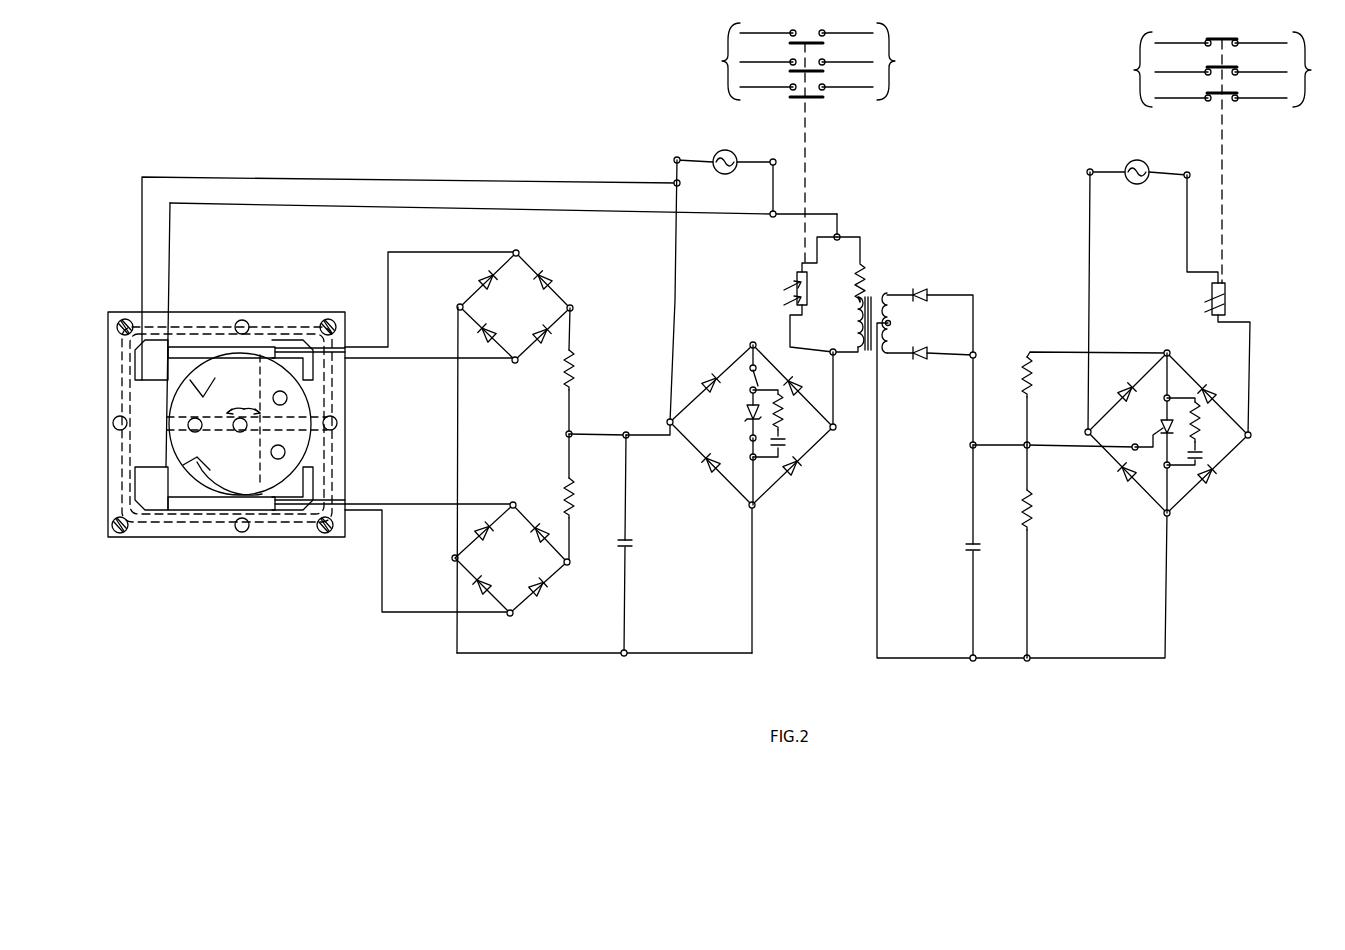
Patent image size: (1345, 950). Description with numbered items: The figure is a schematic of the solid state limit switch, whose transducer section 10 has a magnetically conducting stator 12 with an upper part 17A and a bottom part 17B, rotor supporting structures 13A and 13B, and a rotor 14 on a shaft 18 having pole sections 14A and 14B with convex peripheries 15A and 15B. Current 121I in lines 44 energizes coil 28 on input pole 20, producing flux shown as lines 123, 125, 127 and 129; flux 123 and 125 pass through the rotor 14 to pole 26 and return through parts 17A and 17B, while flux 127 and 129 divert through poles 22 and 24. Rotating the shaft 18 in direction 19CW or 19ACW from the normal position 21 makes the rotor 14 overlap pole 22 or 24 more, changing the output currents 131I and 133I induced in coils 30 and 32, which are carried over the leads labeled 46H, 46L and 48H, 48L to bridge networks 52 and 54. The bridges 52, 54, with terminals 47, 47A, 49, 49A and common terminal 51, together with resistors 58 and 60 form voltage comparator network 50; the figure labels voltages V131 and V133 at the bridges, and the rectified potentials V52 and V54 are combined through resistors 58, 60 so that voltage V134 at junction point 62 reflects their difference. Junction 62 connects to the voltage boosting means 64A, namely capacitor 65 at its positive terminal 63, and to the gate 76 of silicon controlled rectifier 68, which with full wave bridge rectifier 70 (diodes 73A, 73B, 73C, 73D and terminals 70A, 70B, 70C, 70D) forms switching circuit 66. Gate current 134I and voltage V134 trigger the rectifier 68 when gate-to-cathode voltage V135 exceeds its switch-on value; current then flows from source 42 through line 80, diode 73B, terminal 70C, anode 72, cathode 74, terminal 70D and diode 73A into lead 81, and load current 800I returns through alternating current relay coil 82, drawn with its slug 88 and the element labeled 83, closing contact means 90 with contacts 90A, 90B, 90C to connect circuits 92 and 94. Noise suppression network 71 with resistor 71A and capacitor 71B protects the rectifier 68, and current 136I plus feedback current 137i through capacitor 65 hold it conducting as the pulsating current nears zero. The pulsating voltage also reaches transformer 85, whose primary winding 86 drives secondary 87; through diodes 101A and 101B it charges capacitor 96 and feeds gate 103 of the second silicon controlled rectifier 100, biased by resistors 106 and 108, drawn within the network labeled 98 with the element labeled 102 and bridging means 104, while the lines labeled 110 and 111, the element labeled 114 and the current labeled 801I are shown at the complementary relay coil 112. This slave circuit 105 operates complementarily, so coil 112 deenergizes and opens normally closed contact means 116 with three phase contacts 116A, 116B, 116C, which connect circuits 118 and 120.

The switching member 10 is at (249, 281).
The stator 12 is at (108, 313).
The rotor supporting means 13A is at (125, 319).
The rotor supporting means 13B is at (330, 533).
The rotor 14 is at (232, 414).
The magnetic pole section 14A is at (200, 466).
The magnetic pole section 14B is at (292, 488).
The outer periphery 15A is at (279, 425).
The outer periphery 15B is at (292, 360).
The upper part of stator 17A is at (108, 345).
The bottom part of stator 17B is at (108, 530).
The shaft 18 is at (241, 432).
The direction of rotation 19ACW is at (225, 412).
The direction of rotation 19CW is at (255, 414).
The main pole 20 is at (151, 360).
The reference line 21 is at (193, 432).
The magnetic pole structure 22 is at (207, 357).
The magnetic pole 24 is at (247, 470).
The pole 26 is at (313, 483).
The coil 28 is at (151, 488).
The coil 30 is at (263, 347).
The coil 32 is at (207, 505).
The alternating voltage source 42 is at (713, 152).
The lines 44 is at (245, 176).
The high lead 46H is at (392, 252).
The low lead 46L is at (432, 357).
The bridge terminal 47 is at (520, 251).
The terminal 47A is at (572, 305).
The high lead 48H is at (402, 503).
The low lead 48L is at (380, 605).
The bridge terminal 49 is at (514, 616).
The terminal 49A is at (569, 570).
The voltage comparator network 50 is at (521, 679).
The common terminal 51 is at (458, 304).
The bridge network 52 is at (524, 315).
The bridge network 54 is at (519, 562).
The resistor 58 is at (563, 376).
The resistor 60 is at (576, 500).
The junction point 62 is at (568, 430).
The junction point 63 is at (628, 434).
The voltage boosting means 64A is at (634, 680).
The capacitor 65 is at (632, 545).
The switching circuit 66 is at (757, 682).
The silicon controlled rectifier 68 is at (746, 407).
The full wave bridge rectifier network 70 is at (835, 437).
The bridge terminal 70A is at (834, 424).
The bridge terminal 70B is at (670, 418).
The bridge terminal 70C is at (750, 350).
The bridge terminal 70D is at (756, 508).
The noise suppression network 71 is at (784, 436).
The resistor 71A is at (790, 418).
The capacitor 71B is at (786, 443).
The anode 72 is at (750, 385).
The bridge diode 73A is at (800, 472).
The bridge diode 73B is at (712, 380).
The bridge diode 73C is at (790, 383).
The bridge diode 73D is at (705, 472).
The cathode 74 is at (750, 458).
The gate 76 is at (750, 440).
The line 80 is at (672, 246).
The lead 81 is at (834, 377).
The relay coil 82 is at (797, 292).
The resistor 83 is at (866, 262).
The transformer 85 is at (884, 290).
The primary winding 86 is at (855, 306).
The secondary 87 is at (893, 324).
The movable arm 88 is at (790, 280).
The contact means 90 is at (814, 25).
The contact 90A is at (826, 36).
The contact 90B is at (826, 65).
The contact 90C is at (826, 97).
The circuit 92 is at (713, 69).
The circuit 94 is at (900, 61).
The capacitor 96 is at (968, 524).
The bridge circuit 98 is at (1202, 560).
The second silicon controlled rectifier 100 is at (1164, 422).
The diode 101A is at (930, 290).
The diode 101B is at (925, 358).
The RC network 102 is at (1200, 437).
The gate 103 is at (1133, 444).
The bridging means 104 is at (1195, 486).
The slave circuit 105 is at (1142, 692).
The biasing resistor 106 is at (1022, 362).
The biasing resistor 108 is at (1022, 490).
The line 110 is at (1251, 344).
The line 111 is at (1086, 248).
The complementary relay coil 112 is at (1228, 300).
The relay linkage 114 is at (1226, 282).
The contact means 116 is at (1226, 32).
The phase contact 116A is at (1240, 48).
The phase contact 116B is at (1240, 76).
The phase contact 116C is at (1240, 102).
The circuit 118 is at (1129, 69).
The circuit 120 is at (1318, 69).
The current 121I is at (360, 169).
The magnetic flux 123 is at (131, 398).
The magnetic flux 125 is at (122, 478).
The magnetic flux 127 is at (127, 382).
The magnetic flux 129 is at (131, 495).
The output current 131I is at (371, 330).
The output current 133I is at (388, 518).
The current 134I is at (584, 448).
The current 136I is at (636, 446).
The feedback current 137i is at (620, 430).
The load current 800I is at (852, 222).
The current 801I is at (1198, 296).
The voltage V131 is at (516, 250).
The voltage V133 is at (470, 615).
The voltage V134 is at (565, 434).
The gate to cathode voltage V135 is at (740, 437).
The voltage V52 is at (572, 310).
The voltage V54 is at (570, 562).